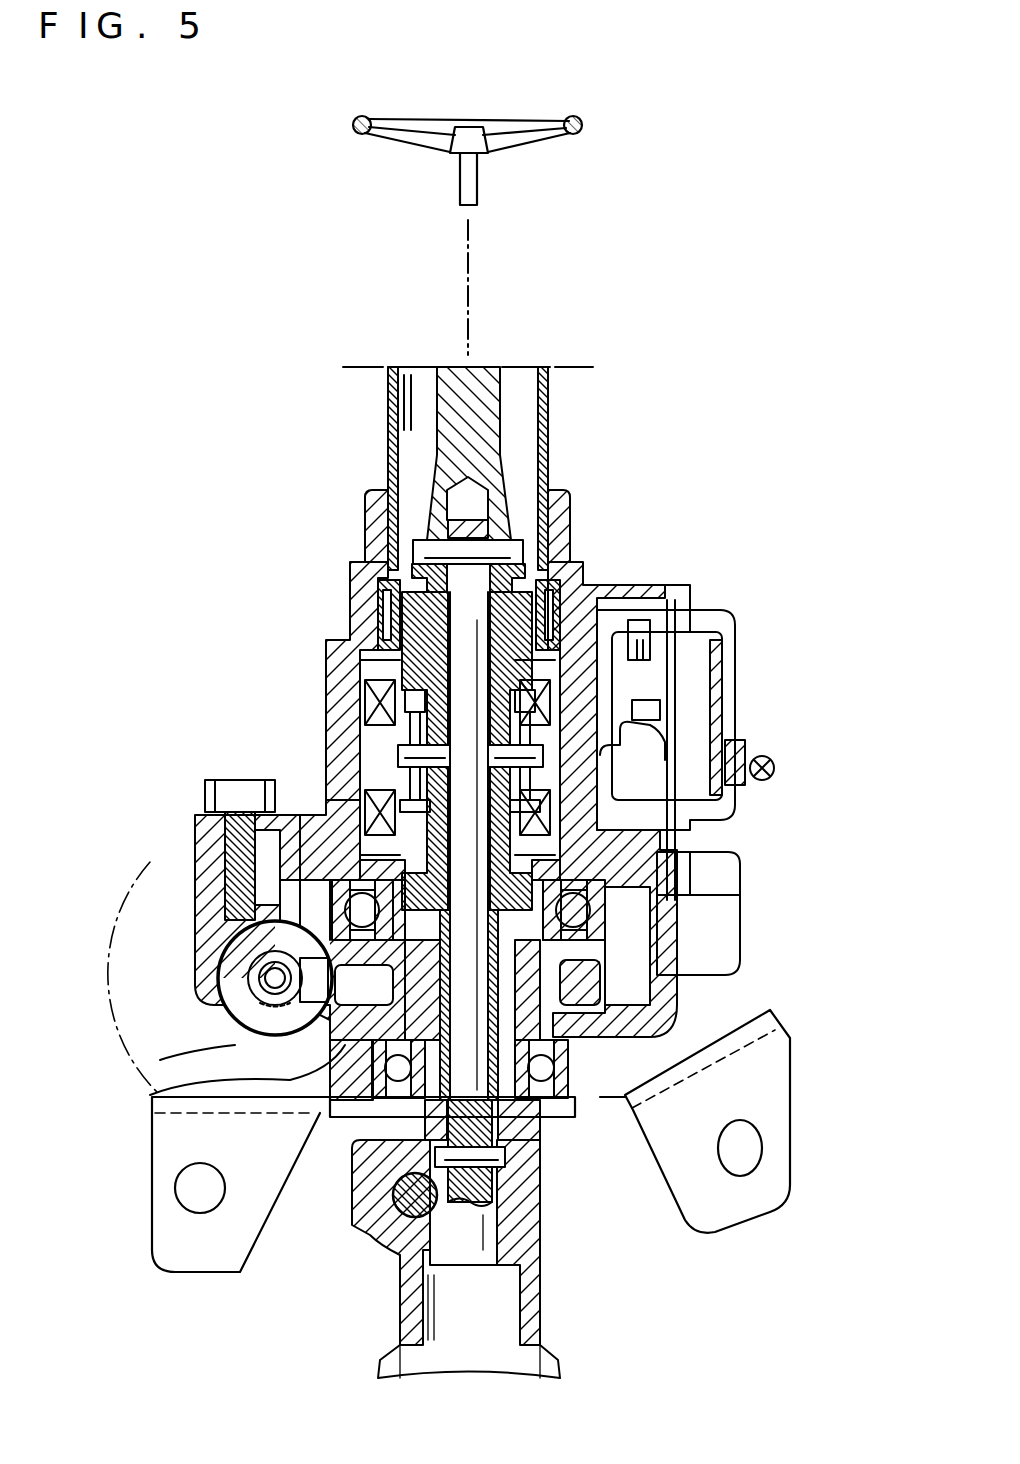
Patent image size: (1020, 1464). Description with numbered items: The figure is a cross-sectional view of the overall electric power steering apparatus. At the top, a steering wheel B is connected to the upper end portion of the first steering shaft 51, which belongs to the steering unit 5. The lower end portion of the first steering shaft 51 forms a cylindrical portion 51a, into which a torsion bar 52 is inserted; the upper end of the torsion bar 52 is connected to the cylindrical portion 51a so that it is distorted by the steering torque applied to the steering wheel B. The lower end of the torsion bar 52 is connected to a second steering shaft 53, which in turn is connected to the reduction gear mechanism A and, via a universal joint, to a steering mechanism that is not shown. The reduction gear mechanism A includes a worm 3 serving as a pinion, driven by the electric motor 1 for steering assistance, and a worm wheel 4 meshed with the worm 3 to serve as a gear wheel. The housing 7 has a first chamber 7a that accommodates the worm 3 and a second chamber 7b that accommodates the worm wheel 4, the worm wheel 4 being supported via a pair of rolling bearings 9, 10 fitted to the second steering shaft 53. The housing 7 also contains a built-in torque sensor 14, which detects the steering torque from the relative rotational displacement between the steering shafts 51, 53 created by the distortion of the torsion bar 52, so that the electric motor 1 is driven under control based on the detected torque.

The steering wheel B is at (583, 128).
The steering unit 5 is at (586, 503).
The first steering shaft 51 is at (487, 424).
The torsion bar 52 is at (558, 595).
The cylindrical portion 51a is at (413, 624).
The housing 7 is at (324, 742).
The first chamber 7a is at (230, 980).
The second chamber 7b is at (345, 1010).
The electric motor 1 is at (150, 862).
The worm 3 is at (255, 932).
The worm wheel 4 is at (260, 1075).
The reduction gear mechanism A is at (242, 1000).
The torque sensor 14 is at (683, 752).
The rolling bearing 9 is at (652, 906).
The rolling bearing 10 is at (585, 1058).
The second steering shaft 53 is at (496, 1105).